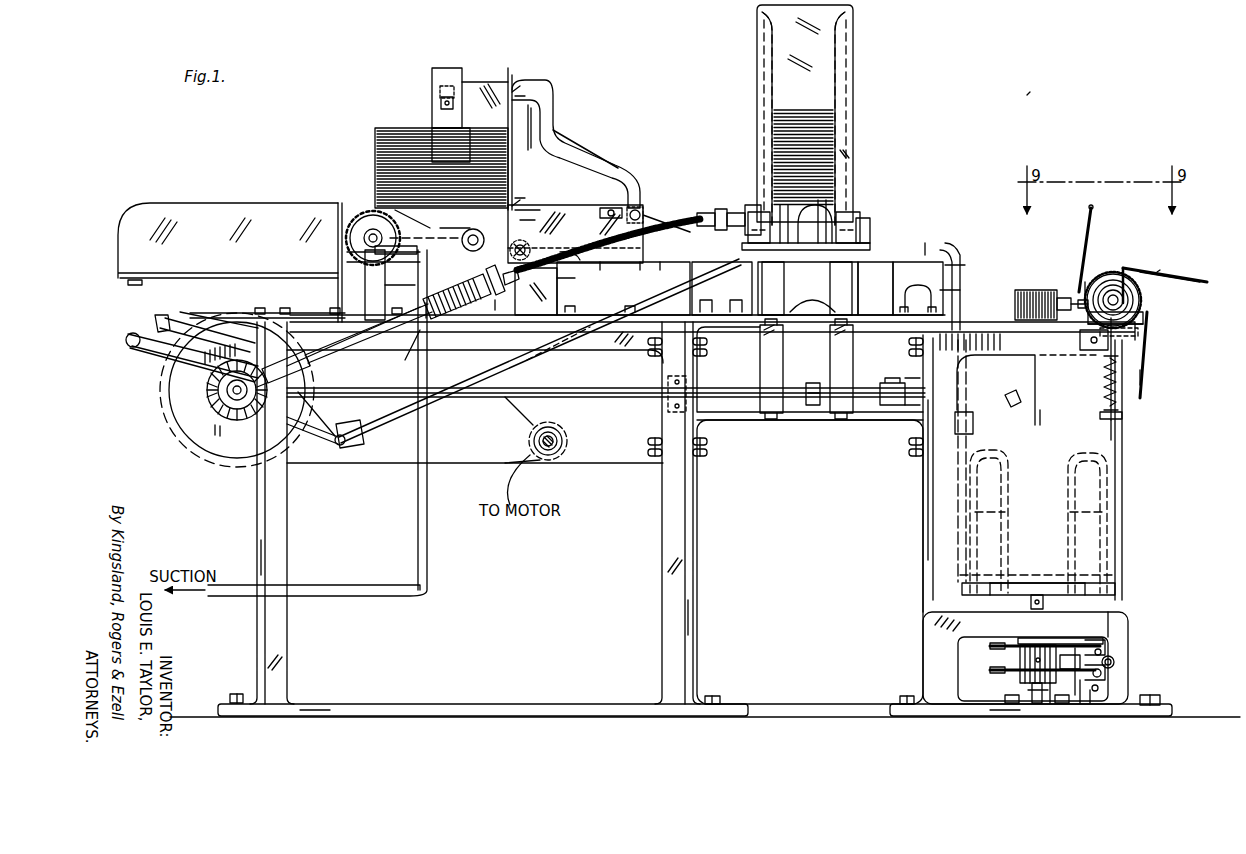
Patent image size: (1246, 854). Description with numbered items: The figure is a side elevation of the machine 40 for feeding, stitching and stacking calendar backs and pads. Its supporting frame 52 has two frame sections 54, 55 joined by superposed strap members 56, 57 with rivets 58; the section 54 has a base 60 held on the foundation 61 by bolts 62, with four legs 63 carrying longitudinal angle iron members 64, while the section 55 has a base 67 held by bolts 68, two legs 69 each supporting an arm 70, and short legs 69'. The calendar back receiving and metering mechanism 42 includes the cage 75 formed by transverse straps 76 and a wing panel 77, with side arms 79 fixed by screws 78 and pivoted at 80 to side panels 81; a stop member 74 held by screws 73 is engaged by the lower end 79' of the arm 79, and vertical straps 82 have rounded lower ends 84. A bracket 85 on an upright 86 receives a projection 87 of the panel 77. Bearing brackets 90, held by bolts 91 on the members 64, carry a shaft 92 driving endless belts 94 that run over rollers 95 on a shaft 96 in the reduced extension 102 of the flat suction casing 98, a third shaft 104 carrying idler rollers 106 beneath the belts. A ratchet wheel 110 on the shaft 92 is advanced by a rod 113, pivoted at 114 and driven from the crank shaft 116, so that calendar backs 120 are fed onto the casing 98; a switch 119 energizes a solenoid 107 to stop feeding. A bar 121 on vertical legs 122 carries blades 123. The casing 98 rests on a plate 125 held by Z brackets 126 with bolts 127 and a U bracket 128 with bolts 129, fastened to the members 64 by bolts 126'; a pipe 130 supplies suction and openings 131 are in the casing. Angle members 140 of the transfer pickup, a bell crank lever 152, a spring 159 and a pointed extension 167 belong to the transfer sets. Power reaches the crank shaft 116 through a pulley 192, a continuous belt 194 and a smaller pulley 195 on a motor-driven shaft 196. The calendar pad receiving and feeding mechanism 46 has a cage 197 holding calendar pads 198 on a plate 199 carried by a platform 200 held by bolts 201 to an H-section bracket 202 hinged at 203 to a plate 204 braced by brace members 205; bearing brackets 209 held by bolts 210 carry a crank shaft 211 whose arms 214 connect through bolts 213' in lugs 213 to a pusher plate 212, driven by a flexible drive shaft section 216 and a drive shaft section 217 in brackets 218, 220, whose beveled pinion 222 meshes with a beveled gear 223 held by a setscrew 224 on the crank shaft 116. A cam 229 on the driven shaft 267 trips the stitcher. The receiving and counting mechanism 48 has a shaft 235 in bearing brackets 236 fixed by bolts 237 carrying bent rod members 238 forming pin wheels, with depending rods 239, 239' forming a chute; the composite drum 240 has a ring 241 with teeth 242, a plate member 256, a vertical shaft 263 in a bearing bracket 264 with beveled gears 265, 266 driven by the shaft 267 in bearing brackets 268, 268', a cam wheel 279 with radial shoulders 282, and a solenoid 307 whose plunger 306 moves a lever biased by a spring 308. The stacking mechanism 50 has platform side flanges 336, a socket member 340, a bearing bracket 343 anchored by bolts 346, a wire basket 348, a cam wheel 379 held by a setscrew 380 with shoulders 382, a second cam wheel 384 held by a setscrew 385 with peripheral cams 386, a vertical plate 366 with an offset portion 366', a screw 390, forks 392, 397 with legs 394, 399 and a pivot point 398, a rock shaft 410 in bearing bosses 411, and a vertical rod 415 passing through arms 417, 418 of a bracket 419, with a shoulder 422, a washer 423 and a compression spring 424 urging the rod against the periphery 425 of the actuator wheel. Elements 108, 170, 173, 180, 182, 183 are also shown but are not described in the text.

The machine 40 is at (1027, 93).
The calendar back receiving and metering mechanism 42 is at (345, 190).
The calendar pad receiving and feeding mechanism 46 is at (856, 140).
The stitched calendar pad and back unit receiving and counting mechanism 48 is at (1162, 268).
The stitched calendar pad and back unit stacking mechanism 50 is at (1032, 580).
The supporting frame 52 is at (254, 648).
The frame section 54 is at (696, 580).
The frame section 55 is at (919, 583).
The strap member 56 is at (730, 330).
The strap member 57 is at (740, 426).
The rivets 58 is at (648, 348).
The base 60 is at (458, 718).
The foundation 61 is at (802, 714).
The bolts 62 is at (234, 692).
The legs 63 is at (270, 553).
The angle iron members 64 is at (600, 352).
The base 67 is at (986, 720).
The bolts 68 is at (899, 699).
The legs 69 is at (901, 480).
The short legs 69' is at (1050, 658).
The arm 70 is at (993, 332).
The screws 73 is at (610, 208).
The stop member 74 is at (612, 262).
The calendar back receiving cage 75 is at (518, 138).
The transverse straps 76 is at (520, 90).
The wing panel 77 is at (480, 82).
The screws 78 is at (525, 95).
The side arms 79 is at (588, 149).
The lower end of arm 79' is at (671, 210).
The pivot 80 is at (645, 210).
The vertical side panels 81 is at (560, 205).
The vertical straps 82 is at (513, 72).
The rounded lower end 84 is at (532, 210).
The bracket 85 is at (440, 103).
The vertical upright 86 is at (438, 68).
The projection 87 is at (450, 86).
The bearing brackets 90 is at (373, 284).
The bolts 91 is at (360, 310).
The shaft 92 is at (341, 225).
The endless belt 94 is at (362, 216).
The roller 95 is at (528, 250).
The shaft 96 is at (527, 242).
The flat suction casing 98 is at (528, 216).
The reduced extension 102 is at (458, 228).
The third shaft 104 is at (536, 291).
The idler roller 106 is at (476, 229).
The solenoid 107 is at (457, 293).
The rod 108 is at (430, 226).
The ratchet wheel 110 is at (346, 233).
The rod 113 is at (387, 284).
The pivotal connection 114 is at (430, 312).
The crank shaft 116 is at (207, 390).
The switch 119 is at (656, 262).
The calendar backs 120 is at (375, 152).
The bar 121 is at (706, 218).
The vertical legs 122 is at (722, 289).
The vertical blades 123 is at (662, 262).
The plate 125 is at (608, 350).
The Z brackets 126 is at (623, 288).
The bolts 126' is at (558, 353).
The rivets or bolts 127 is at (560, 277).
The U bracket 128 is at (942, 290).
The rivets or bolts 129 is at (962, 266).
The pipe 130 is at (346, 254).
The openings 131 is at (918, 288).
The angle members 140 is at (928, 248).
The bell crank lever 152 is at (736, 306).
The spring 159 is at (962, 258).
The pointed extension 167 is at (952, 246).
The arm 170 is at (162, 322).
The rod 173 is at (447, 400).
The arm 180 is at (133, 333).
The bar 182 is at (383, 428).
The joint 183 is at (352, 450).
The pulley 192 is at (192, 441).
The continuous belt 194 is at (405, 362).
The smaller pulley 195 is at (566, 452).
The shaft 196 is at (547, 450).
The cage 197 is at (843, 80).
The calendar pads 198 is at (814, 113).
The plate 199 is at (932, 242).
The platform 200 is at (800, 303).
The bolts 201 is at (774, 262).
The bracket 202 is at (853, 273).
The hinge 203 is at (830, 325).
The plate 204 is at (850, 309).
The brace members 205 is at (845, 372).
The bearing brackets 209 is at (752, 212).
The bolts 210 is at (866, 236).
The crank shaft 211 is at (810, 210).
The pusher plate 212 is at (806, 240).
The lugs 213 is at (821, 219).
The bolts 213' is at (715, 228).
The arms 214 is at (825, 208).
The flexible drive shaft section 216 is at (575, 256).
The drive shaft section 217 is at (280, 332).
The bracket 218 is at (495, 312).
The bracket 220 is at (302, 372).
The beveled pinion 222 is at (300, 400).
The beveled gear 223 is at (210, 398).
The setscrew 224 is at (243, 394).
The cam 229 is at (810, 405).
The shaft 235 is at (1145, 297).
The bearing brackets 236 is at (1150, 323).
The bolts 237 is at (1146, 315).
The rod members 238 is at (1096, 211).
The depending rods 239 is at (1000, 322).
The depending rods 239' is at (1063, 426).
The composite drum 240 is at (1102, 280).
The ring 241 is at (1116, 280).
The teeth 242 is at (1127, 268).
The plate member 256 is at (1092, 352).
The vertical shaft 263 is at (957, 472).
The bearing bracket 264 is at (975, 428).
The beveled gear 265 is at (976, 402).
The beveled gear 266 is at (1040, 360).
The driven shaft 267 is at (873, 395).
The bearing bracket 268 is at (894, 383).
The bearing bracket 268' is at (649, 399).
The cam wheel 279 is at (1167, 275).
The radial shoulders 282 is at (1083, 285).
The plunger 306 is at (1063, 297).
The solenoid 307 is at (1036, 290).
The spring 308 is at (1087, 344).
The side flanges 336 is at (1116, 588).
The socket member 340 is at (1032, 607).
The bearing bracket 343 is at (1037, 706).
The bolts 346 is at (1005, 698).
The wire basket 348 is at (1075, 456).
The vertical plate 366 is at (1121, 714).
The offset portion 366' is at (1061, 661).
The cam wheel 379 is at (1045, 640).
The setscrew 380 is at (1036, 660).
The radial shoulders 382 is at (989, 646).
The second cam wheel 384 is at (1052, 705).
The setscrew 385 is at (1030, 689).
The peripheral cams 386 is at (1000, 671).
The screw 390 is at (1106, 678).
The fork 392 is at (1110, 687).
The legs 394 is at (1083, 704).
The fork 397 is at (1112, 622).
The pivot point 398 is at (1114, 656).
The legs 399 is at (1086, 642).
The rock shaft 410 is at (1116, 662).
The bearing bosses 411 is at (1104, 673).
The vertical rod 415 is at (1132, 348).
The arm 417 is at (1118, 425).
The arm 418 is at (1142, 333).
The bracket 419 is at (1124, 416).
The shoulder 422 is at (1122, 360).
The washer 423 is at (1146, 378).
The compression spring 424 is at (1104, 406).
The periphery 425 is at (1082, 293).